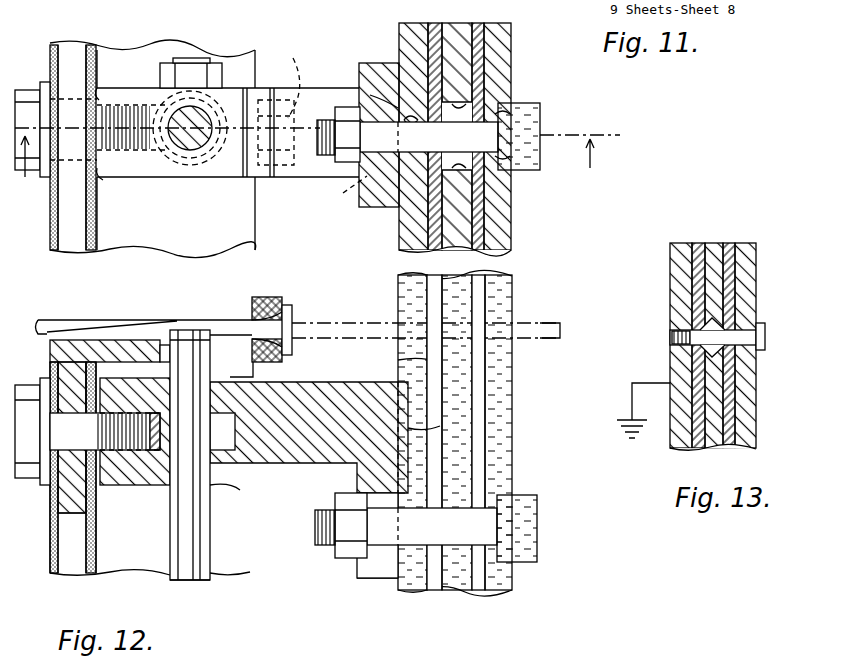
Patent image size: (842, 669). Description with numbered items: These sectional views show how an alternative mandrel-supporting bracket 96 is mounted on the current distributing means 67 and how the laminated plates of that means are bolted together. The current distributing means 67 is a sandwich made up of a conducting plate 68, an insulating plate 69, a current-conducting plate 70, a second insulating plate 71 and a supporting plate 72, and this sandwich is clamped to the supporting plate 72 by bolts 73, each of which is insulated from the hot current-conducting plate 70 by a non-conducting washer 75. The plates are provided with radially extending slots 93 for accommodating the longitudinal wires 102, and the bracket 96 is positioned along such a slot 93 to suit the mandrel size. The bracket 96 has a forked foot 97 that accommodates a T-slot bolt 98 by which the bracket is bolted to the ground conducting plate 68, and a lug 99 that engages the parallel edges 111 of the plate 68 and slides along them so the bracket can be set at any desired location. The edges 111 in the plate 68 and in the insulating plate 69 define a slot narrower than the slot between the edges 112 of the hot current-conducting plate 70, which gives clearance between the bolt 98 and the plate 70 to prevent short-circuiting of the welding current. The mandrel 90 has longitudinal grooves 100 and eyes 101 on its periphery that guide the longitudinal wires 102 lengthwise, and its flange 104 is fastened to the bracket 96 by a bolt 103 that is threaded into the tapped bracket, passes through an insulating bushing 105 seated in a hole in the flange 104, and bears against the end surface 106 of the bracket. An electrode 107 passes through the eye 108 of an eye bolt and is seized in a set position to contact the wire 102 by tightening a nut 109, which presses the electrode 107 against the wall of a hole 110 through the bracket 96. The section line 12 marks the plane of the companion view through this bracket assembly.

In FIG. 11, the section line 12— 12 is at (315, 174).
In FIG. 13, the current distributing means 67 is at (660, 308).
In FIG. 11, the conducting plate 68 is at (403, 32).
In FIG. 13, the conducting plate 68 is at (680, 251).
In FIG. 12, the conducting plate 68 is at (400, 592).
In FIG. 11, the insulating plate 69 is at (433, 54).
In FIG. 13, the insulating plate 69 is at (699, 243).
In FIG. 12, the insulating plate 69 is at (435, 592).
In FIG. 11, the current-conducting plate 70 is at (458, 33).
In FIG. 13, the current-conducting plate 70 is at (713, 243).
In FIG. 12, the current-conducting plate 70 is at (458, 592).
In FIG. 11, the insulating plate 71 is at (478, 50).
In FIG. 13, the insulating plate 71 is at (730, 243).
In FIG. 12, the insulating plate 71 is at (480, 592).
In FIG. 11, the supporting plate 72 is at (495, 66).
In FIG. 13, the supporting plate 72 is at (755, 246).
In FIG. 13, the bolts 73 is at (748, 351).
In FIG. 13, the non-conducting washer 75 is at (722, 324).
In FIG. 11, the mandrel 90 is at (195, 42).
In FIG. 12, the mandrel 90 is at (77, 329).
In FIG. 12, the radially extending slots 93 is at (505, 388).
In FIG. 11, the mandrel-supporting bracket 96 is at (297, 180).
In FIG. 12, the mandrel-supporting bracket 96 is at (229, 480).
In FIG. 11, the foot 97 is at (365, 208).
In FIG. 12, the foot 97 is at (366, 576).
In FIG. 11, the T-slot bolt 98 is at (540, 122).
In FIG. 12, the T-slot bolt 98 is at (538, 506).
In FIG. 11, the lug 99 is at (341, 200).
In FIG. 12, the lug 99 is at (439, 442).
In FIG. 12, the longitudinal grooves 100 is at (179, 330).
In FIG. 11, the eyes 101 is at (296, 81).
In FIG. 12, the eyes 101 is at (292, 312).
In FIG. 12, the longitudinal wires 102 is at (541, 322).
In FIG. 11, the bolt 103 is at (28, 88).
In FIG. 12, the bolt 103 is at (123, 492).
In FIG. 11, the flange 104 is at (70, 46).
In FIG. 12, the flange 104 is at (66, 540).
In FIG. 11, the insulating bushing 105 is at (98, 178).
In FIG. 12, the insulating bushing 105 is at (68, 504).
In FIG. 11, the end surface 106 is at (100, 86).
In FIG. 12, the end surface 106 is at (114, 386).
In FIG. 11, the electrode 107 is at (201, 150).
In FIG. 12, the electrode 107 is at (188, 582).
In FIG. 11, the eye 108 is at (163, 98).
In FIG. 12, the eye 108 is at (162, 488).
In FIG. 11, the nut 109 is at (217, 66).
In FIG. 11, the hole 110 is at (180, 148).
In FIG. 12, the hole 110 is at (240, 490).
In FIG. 11, the edges 111 is at (375, 96).
In FIG. 12, the edges 111 is at (410, 360).
In FIG. 11, the edges 112 is at (500, 108).